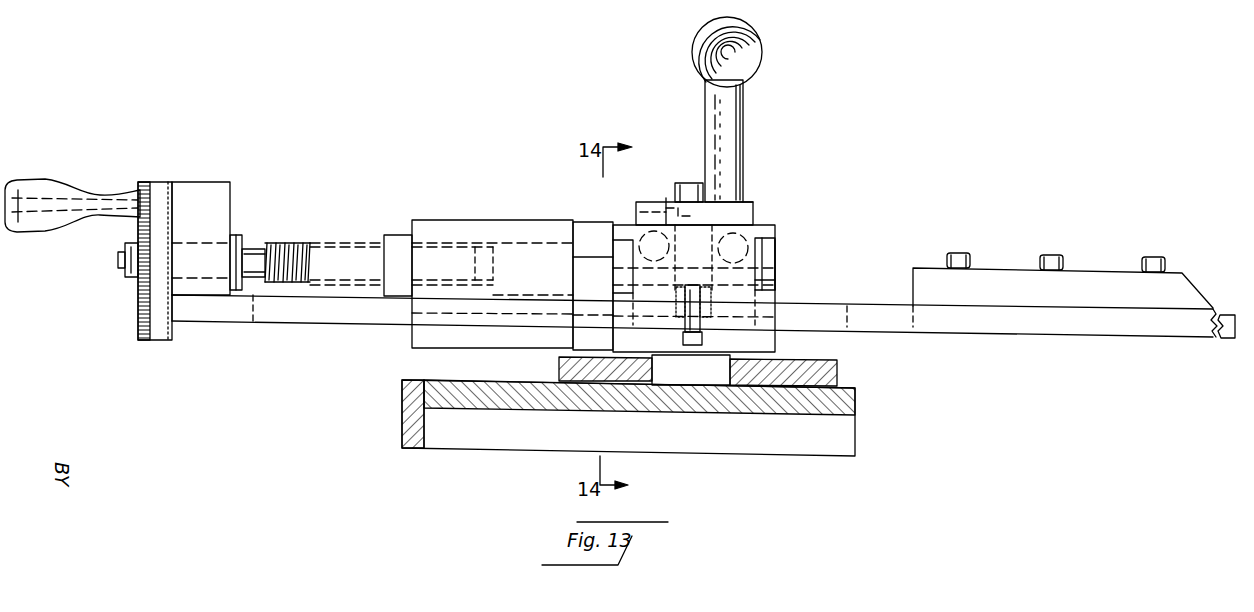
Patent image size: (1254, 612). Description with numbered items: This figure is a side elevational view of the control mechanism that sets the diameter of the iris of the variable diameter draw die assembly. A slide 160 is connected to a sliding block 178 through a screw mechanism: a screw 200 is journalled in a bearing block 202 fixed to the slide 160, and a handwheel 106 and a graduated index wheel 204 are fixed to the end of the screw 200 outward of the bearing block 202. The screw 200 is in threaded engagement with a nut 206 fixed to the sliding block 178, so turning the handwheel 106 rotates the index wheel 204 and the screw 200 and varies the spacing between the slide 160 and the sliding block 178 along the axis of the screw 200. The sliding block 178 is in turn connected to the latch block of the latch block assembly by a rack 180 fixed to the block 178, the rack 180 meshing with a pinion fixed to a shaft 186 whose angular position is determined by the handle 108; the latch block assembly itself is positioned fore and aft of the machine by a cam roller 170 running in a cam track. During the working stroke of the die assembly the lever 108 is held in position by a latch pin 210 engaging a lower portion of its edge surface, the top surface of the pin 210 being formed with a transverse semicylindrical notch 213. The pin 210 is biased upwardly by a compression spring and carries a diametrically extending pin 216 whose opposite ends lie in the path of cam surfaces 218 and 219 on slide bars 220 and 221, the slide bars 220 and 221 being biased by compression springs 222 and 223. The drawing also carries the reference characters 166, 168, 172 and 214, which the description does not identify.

The handwheel 106 is at (70, 180).
The handle 108 is at (745, 110).
The slide 160 is at (805, 306).
The plate 166 is at (559, 372).
The base plate 168 is at (793, 382).
The cam roller 170 is at (730, 376).
The base 172 is at (470, 405).
The sliding block 178 is at (512, 220).
The rack 180 is at (580, 222).
The shaft 186 is at (700, 185).
The screw 200 is at (320, 214).
The bearing block 202 is at (178, 182).
The graduated index wheel 204 is at (140, 326).
The nut 206 is at (398, 235).
The latch pin 210 is at (636, 206).
The transverse semicylindrical notch 213 is at (745, 208).
The bolt 214 is at (705, 297).
The diametrically extending pin 216 is at (757, 263).
The cam surface 218 is at (613, 268).
The cam surface 219 is at (757, 280).
The slide bar 220 is at (613, 285).
The slide bar 221 is at (777, 248).
The compression spring 222 is at (642, 231).
The compression spring 223 is at (748, 222).